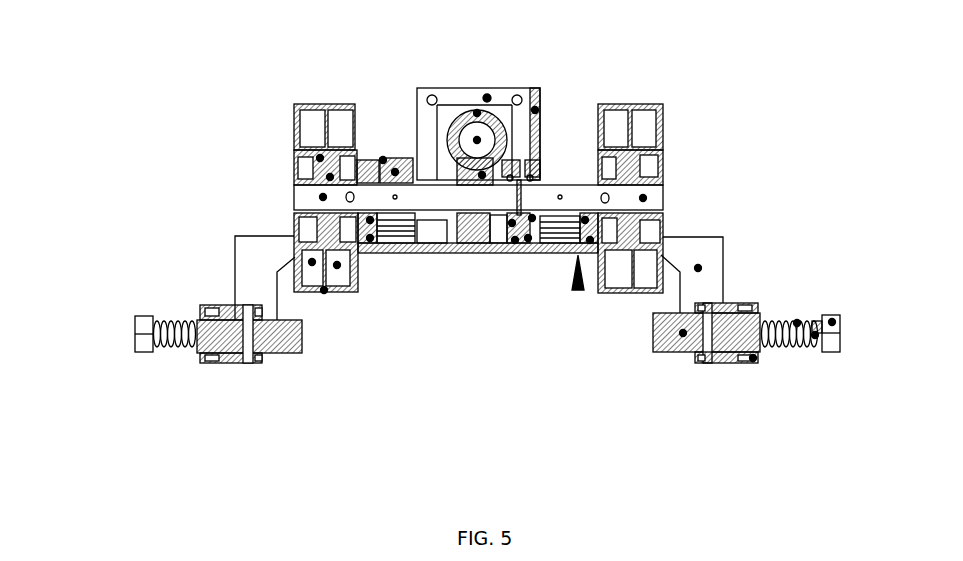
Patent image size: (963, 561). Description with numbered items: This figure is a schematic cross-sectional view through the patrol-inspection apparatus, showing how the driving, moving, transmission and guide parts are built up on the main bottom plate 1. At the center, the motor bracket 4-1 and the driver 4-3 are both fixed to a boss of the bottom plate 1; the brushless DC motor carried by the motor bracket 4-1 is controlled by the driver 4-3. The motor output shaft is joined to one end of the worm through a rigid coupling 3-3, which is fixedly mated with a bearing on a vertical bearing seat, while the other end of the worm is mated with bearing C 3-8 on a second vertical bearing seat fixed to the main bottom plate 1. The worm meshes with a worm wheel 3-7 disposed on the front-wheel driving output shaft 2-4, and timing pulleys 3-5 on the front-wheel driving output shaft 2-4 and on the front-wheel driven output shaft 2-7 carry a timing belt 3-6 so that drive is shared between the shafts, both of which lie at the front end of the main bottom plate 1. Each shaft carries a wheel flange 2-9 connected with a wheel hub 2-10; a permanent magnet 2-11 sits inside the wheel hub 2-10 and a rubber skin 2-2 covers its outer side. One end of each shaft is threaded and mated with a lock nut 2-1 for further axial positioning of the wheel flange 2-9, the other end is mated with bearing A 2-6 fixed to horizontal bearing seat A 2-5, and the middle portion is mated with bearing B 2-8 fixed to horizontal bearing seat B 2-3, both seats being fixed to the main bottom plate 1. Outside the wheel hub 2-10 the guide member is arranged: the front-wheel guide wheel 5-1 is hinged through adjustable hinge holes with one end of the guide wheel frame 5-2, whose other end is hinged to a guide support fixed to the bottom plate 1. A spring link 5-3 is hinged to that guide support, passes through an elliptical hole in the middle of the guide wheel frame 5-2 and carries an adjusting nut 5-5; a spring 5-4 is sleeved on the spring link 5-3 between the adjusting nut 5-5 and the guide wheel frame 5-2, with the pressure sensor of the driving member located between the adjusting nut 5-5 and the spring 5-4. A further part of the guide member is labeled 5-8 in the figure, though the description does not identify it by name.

The main bottom plate 1 is at (578, 290).
The lock nut 2-1 is at (350, 191).
The rubber skin 2-2 is at (278, 321).
The horizontal bearing seat B 2-3 is at (325, 290).
The front-wheel driving output shaft 2-4 is at (296, 193).
The horizontal bearing seat A 2-5 is at (407, 480).
The bearing A 2-6 is at (483, 250).
The front-wheel driven output shaft 2-7 is at (643, 198).
The bearing B 2-8 is at (302, 347).
The wheel flange 2-9 is at (235, 237).
The wheel hub 2-10 is at (296, 152).
The permanent magnet 2-11 is at (196, 322).
The rigid coupling 3-3 is at (477, 140).
The timing pulley 3-5 is at (322, 147).
The timing belt 3-6 is at (358, 168).
The worm wheel 3-7 is at (452, 180).
The bearing C 3-8 is at (477, 113).
The motor bracket 4-1 is at (487, 98).
The driver 4-3 is at (535, 110).
The front-wheel guide wheel 5-1 is at (717, 363).
The guide wheel frame 5-2 is at (753, 358).
The spring link 5-3 is at (815, 335).
The spring 5-4 is at (797, 323).
The adjusting nut 5-5 is at (903, 302).
The right bracket 5-8 is at (698, 268).